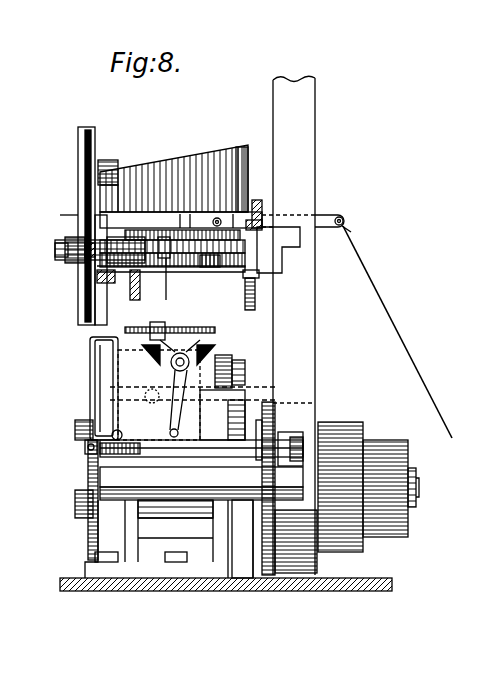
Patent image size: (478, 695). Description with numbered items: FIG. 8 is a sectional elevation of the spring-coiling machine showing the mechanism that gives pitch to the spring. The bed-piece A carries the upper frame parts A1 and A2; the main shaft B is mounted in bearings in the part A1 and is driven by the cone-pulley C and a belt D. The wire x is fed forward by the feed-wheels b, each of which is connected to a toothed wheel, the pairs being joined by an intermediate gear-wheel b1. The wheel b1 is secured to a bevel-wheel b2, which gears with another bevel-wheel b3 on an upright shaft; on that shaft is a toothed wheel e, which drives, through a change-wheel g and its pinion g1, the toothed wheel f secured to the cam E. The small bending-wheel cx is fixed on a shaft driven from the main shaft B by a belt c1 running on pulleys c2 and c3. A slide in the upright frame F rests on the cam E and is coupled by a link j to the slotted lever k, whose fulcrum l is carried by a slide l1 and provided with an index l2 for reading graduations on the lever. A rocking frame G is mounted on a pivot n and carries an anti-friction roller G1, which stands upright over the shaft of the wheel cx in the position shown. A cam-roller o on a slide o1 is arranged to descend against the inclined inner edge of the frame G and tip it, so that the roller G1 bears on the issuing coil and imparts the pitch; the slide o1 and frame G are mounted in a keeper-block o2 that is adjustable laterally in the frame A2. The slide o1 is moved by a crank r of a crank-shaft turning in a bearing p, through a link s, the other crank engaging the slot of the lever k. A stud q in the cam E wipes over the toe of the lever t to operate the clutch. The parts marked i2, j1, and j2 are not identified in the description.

The bed-piece A is at (226, 597).
The frame part A1 is at (112, 515).
The frame part A2 is at (200, 457).
The main shaft B is at (242, 539).
The cone-pulley C is at (320, 412).
The belt c1 is at (268, 480).
The sheave c2 is at (268, 402).
The sheave c3 is at (284, 466).
The bending-wheel cx is at (85, 450).
The belt D is at (303, 302).
The cam E is at (160, 172).
The upright frame F is at (78, 152).
The rocking frame G is at (192, 395).
The anti-friction roller G1 is at (90, 357).
The feed-wheels b is at (88, 517).
The intermediate gear-wheel b1 is at (250, 357).
The bevel-wheel b2 is at (235, 340).
The bevel-wheel b3 is at (142, 362).
The toothed wheel e is at (190, 268).
The toothed wheel f is at (200, 228).
The change-wheel g is at (232, 268).
The pinion g1 is at (212, 268).
The hub i2 is at (108, 160).
The link j is at (61, 215).
The arm j1 is at (337, 203).
The rod j2 is at (395, 288).
The slotted lever k is at (85, 257).
The adjustable fulcrum l is at (55, 252).
The slide l1 is at (110, 258).
The index l2 is at (70, 240).
The pivot n is at (122, 430).
The cam-roller o is at (186, 354).
The slide o1 is at (150, 333).
The keeper-block o2 is at (205, 415).
The bearing p is at (128, 290).
The stud q is at (262, 212).
The crank r is at (180, 214).
The link s is at (165, 292).
The lever t is at (257, 198).
The wire x is at (95, 382).